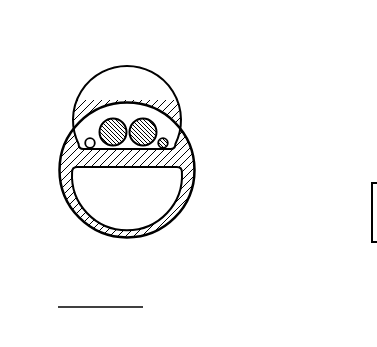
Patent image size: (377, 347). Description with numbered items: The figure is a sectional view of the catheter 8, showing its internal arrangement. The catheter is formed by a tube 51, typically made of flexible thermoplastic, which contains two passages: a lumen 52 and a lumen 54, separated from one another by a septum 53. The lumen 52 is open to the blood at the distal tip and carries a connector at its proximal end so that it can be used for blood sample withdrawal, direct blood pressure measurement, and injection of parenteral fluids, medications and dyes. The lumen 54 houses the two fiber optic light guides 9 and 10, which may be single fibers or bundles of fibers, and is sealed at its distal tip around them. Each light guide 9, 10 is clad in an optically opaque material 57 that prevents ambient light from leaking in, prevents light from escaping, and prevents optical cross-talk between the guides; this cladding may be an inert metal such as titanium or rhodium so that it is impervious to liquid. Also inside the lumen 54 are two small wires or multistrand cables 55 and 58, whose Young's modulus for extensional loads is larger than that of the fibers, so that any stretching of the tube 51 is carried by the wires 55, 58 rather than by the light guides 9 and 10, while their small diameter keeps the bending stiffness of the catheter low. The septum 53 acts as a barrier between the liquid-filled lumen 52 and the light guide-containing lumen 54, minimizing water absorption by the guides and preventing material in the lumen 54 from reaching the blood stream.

The catheter 8 is at (133, 263).
The fiber optic light guide 9 is at (138, 117).
The fiber optic light guide 10 is at (122, 117).
The tube 51 is at (193, 158).
The lumen 52 is at (162, 190).
The septum 53 is at (90, 157).
The lumen 54 is at (86, 138).
The wire 55 is at (83, 128).
The optically opaque clad material 57 is at (138, 118).
The wire 58 is at (170, 141).